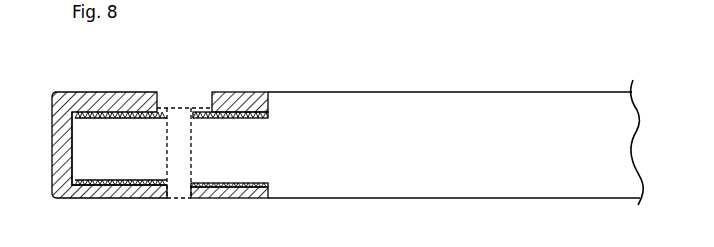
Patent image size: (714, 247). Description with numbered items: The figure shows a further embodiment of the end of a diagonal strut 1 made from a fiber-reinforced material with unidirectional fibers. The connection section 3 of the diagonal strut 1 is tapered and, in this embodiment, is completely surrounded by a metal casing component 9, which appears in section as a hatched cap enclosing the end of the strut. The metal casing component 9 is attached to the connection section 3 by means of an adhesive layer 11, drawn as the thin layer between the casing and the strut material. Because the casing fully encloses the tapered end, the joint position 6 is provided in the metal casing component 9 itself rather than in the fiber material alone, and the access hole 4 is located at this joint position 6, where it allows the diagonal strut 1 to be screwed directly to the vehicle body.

The diagonal strut 1 is at (412, 77).
The connection section 3 is at (122, 168).
The access hole 4 is at (192, 158).
The joint position 6 is at (203, 92).
The metal casing component 9 is at (110, 92).
The adhesive layer 11 is at (268, 118).